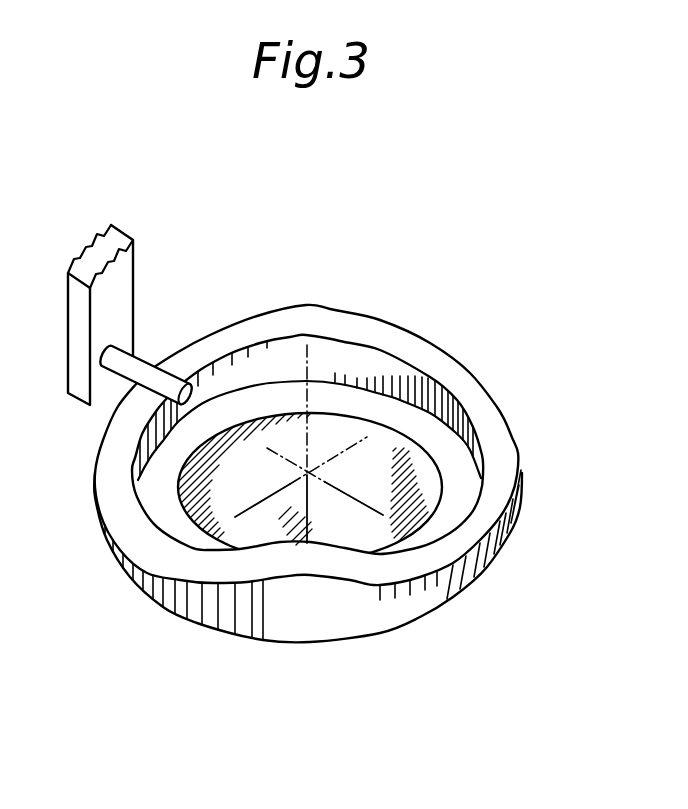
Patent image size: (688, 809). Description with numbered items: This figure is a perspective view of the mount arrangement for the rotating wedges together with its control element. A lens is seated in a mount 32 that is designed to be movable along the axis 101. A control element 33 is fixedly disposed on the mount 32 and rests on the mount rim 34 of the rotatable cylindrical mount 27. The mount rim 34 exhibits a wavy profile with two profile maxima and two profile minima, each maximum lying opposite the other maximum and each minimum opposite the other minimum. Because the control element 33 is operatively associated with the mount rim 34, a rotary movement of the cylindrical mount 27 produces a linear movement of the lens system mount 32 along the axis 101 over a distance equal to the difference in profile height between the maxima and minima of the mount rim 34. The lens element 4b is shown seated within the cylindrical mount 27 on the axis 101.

The mount 32 is at (120, 288).
The control element 33 is at (157, 391).
The mount rim 34 is at (423, 357).
The lens 4b is at (210, 510).
The cylindrical mount 27 is at (247, 618).
The axis 101 is at (313, 523).